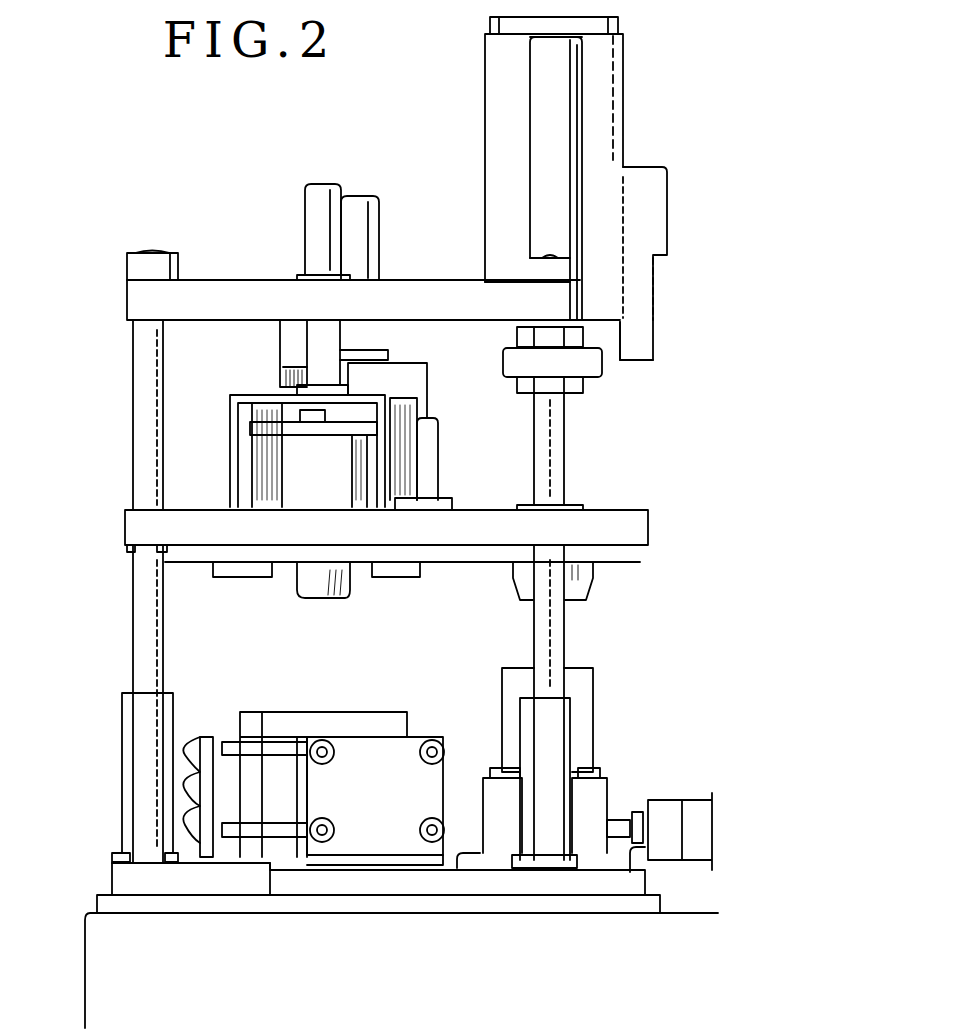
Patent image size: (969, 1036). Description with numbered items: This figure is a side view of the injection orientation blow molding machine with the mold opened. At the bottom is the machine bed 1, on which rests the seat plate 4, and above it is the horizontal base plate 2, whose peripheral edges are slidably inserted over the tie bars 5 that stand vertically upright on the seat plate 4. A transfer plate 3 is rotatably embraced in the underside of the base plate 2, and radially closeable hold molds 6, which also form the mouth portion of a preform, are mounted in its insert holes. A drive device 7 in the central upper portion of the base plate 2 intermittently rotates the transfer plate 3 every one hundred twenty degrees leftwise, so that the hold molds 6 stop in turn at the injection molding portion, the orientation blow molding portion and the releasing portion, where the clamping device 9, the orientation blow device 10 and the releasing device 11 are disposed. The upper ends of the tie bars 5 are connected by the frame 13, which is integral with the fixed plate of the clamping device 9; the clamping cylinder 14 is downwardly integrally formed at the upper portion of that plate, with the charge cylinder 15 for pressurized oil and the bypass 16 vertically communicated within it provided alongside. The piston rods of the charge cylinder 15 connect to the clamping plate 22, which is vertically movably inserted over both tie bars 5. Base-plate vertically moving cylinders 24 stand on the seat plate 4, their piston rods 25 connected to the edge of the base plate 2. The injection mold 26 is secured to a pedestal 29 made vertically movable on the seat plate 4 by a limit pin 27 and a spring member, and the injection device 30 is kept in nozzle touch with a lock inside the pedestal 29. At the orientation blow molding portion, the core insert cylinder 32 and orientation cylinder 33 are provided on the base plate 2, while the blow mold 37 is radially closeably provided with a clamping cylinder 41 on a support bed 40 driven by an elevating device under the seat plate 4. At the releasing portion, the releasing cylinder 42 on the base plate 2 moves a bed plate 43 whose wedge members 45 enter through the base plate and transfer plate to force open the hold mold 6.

The machine bed 1 is at (80, 975).
The base plate 2 is at (185, 522).
The transfer plate 3 is at (185, 548).
The seat plate 4 is at (128, 880).
The tie bar 5 is at (148, 370).
The hold mold 6 is at (320, 590).
The drive device 7 is at (420, 460).
The clamping device 9 is at (665, 320).
The orientation blow device 10 is at (293, 252).
The releasing device 11 is at (245, 393).
The frame 13 is at (222, 290).
The clamping cylinder 14 is at (500, 72).
The charge cylinder 15 is at (540, 165).
The bypass 16 is at (650, 207).
The clamping plate 22 is at (584, 362).
The base-plate vertically moving cylinder 24 is at (125, 727).
The piston rod 25 is at (548, 643).
The injection mold 26 is at (585, 725).
The limit pin 27 is at (460, 870).
The pedestal 29 is at (493, 800).
The injection device 30 is at (700, 812).
The core insert cylinder 32 is at (355, 225).
The orientation cylinder 33 is at (321, 200).
The blow mold 37 is at (258, 707).
The support bed 40 is at (270, 870).
The clamping cylinder 41 is at (185, 790).
The releasing cylinder 42 is at (330, 335).
The bed plate 43 is at (265, 428).
The wedge member 45 is at (270, 474).